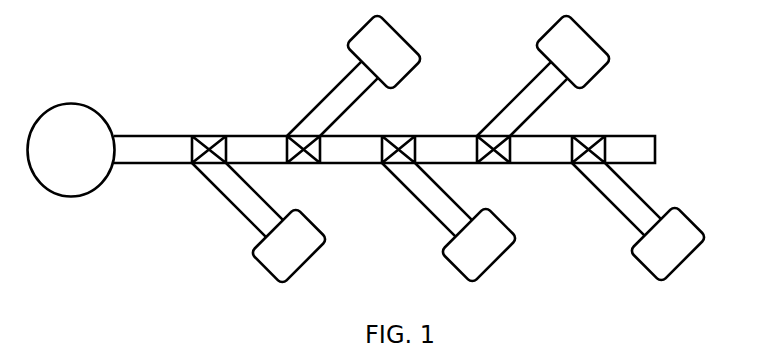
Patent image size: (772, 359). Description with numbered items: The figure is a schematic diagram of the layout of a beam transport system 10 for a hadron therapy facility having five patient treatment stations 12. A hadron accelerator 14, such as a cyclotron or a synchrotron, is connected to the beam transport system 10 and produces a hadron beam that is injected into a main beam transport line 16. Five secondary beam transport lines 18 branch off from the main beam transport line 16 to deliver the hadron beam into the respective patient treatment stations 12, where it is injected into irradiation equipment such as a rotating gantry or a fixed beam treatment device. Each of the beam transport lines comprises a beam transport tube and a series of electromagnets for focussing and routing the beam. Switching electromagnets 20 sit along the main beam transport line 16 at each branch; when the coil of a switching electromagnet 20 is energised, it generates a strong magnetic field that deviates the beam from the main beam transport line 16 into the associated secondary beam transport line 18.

The beam transport system 10 is at (667, 82).
The patient treatment stations 12 is at (299, 256).
The hadron accelerator 14 is at (71, 150).
The main beam transport line 16 is at (150, 150).
The secondary beam transport lines 18 is at (247, 214).
The switching electromagnets 20 is at (205, 147).